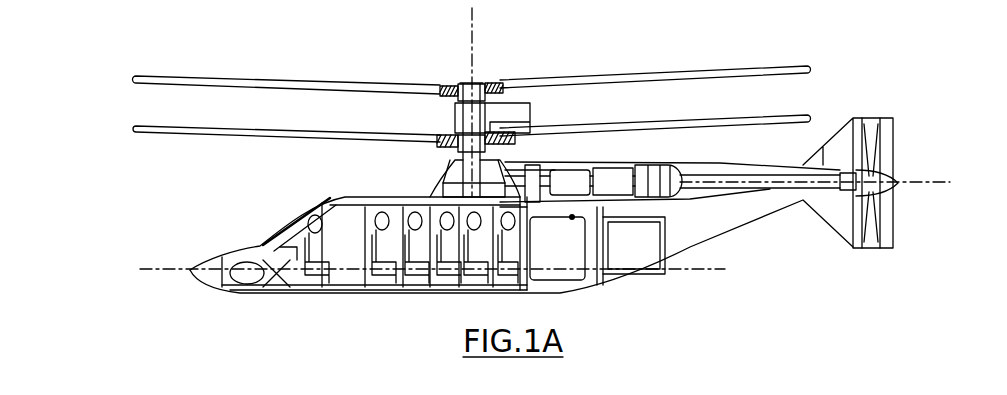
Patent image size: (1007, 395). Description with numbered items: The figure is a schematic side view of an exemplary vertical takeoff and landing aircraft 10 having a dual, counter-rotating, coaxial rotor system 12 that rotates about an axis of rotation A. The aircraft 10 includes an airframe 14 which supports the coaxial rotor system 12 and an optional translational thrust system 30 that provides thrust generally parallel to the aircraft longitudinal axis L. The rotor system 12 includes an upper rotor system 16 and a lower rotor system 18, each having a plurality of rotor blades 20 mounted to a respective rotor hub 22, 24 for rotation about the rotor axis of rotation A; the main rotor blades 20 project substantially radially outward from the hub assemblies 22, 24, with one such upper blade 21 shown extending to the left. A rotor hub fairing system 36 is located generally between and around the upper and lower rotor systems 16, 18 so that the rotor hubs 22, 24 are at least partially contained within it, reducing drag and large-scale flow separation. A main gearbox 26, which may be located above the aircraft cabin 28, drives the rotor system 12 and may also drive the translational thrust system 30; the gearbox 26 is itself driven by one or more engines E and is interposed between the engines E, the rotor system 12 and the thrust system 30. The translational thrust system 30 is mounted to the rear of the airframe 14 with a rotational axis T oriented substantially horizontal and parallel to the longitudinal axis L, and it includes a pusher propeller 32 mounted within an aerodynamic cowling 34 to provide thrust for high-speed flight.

The vertical takeoff and landing aircraft 10 is at (681, 50).
The dual, counter-rotating, coaxial rotor system 12 is at (525, 74).
The airframe 14 is at (350, 194).
The upper rotor system 16 is at (452, 74).
The lower rotor system 18 is at (424, 133).
The rotor blades 20 is at (576, 83).
The upper rotor blade 21 is at (432, 86).
The rotor hub 22 is at (488, 80).
The rotor hub 24 is at (528, 131).
The main gearbox 26 is at (447, 174).
The aircraft cabin 28 is at (412, 277).
The translational thrust system 30 is at (905, 143).
The pusher propeller 32 is at (880, 156).
The aerodynamic cowling 34 is at (868, 117).
The rotor hub fairing system 36 is at (440, 113).
The axis of rotation A is at (474, 26).
The engines E is at (628, 176).
The aircraft longitudinal axis L is at (722, 268).
The rotational axis T is at (927, 192).